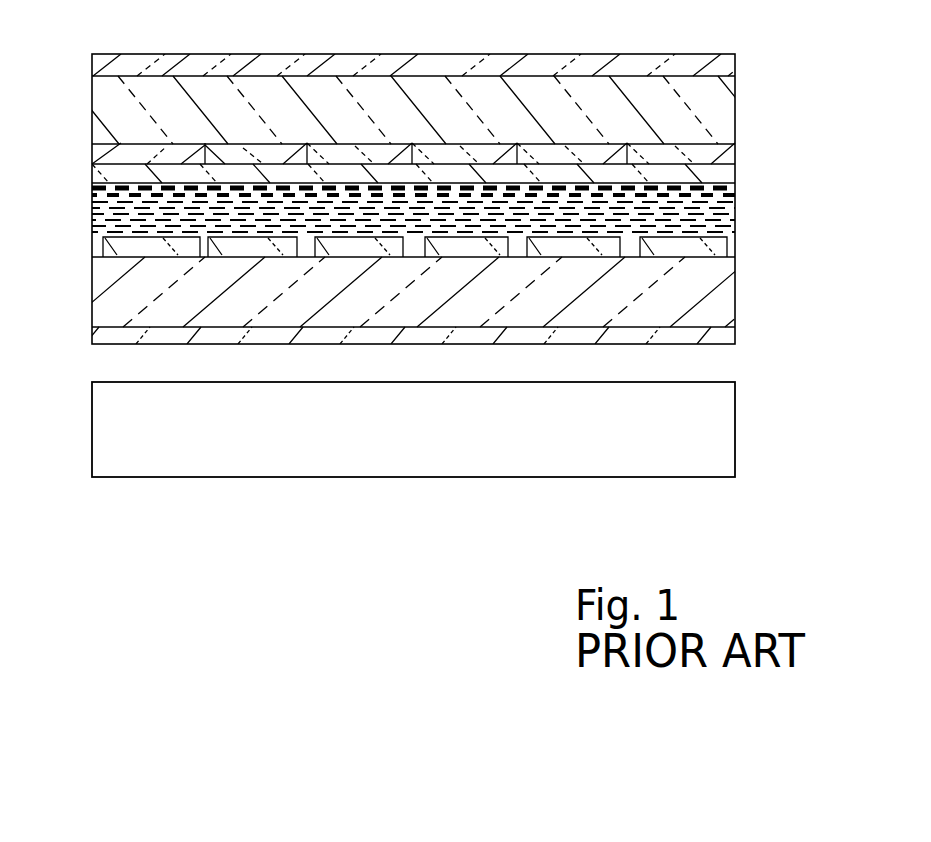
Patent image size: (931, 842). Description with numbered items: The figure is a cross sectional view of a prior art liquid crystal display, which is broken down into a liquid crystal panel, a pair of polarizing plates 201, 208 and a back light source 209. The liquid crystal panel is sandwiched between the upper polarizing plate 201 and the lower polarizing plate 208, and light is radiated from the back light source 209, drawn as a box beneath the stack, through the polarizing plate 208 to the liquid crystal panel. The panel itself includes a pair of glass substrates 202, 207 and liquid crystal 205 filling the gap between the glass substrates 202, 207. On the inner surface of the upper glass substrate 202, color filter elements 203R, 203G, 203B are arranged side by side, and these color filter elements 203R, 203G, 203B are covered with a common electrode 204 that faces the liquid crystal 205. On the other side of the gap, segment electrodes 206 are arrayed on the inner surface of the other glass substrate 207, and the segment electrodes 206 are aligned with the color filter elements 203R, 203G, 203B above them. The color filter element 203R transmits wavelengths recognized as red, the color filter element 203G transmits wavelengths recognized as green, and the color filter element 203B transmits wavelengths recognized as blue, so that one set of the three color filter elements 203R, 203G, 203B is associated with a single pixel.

The polarizing plate 201 is at (735, 62).
The glass substrate 202 is at (735, 112).
The color filter element 203R is at (142, 150).
The color filter element 203G is at (257, 150).
The color filter element 203B is at (735, 147).
The common electrode 204 is at (735, 173).
The liquid crystal 205 is at (735, 217).
The segment electrodes 206 is at (735, 257).
The glass substrate 207 is at (735, 297).
The polarizing plate 208 is at (735, 337).
The back light source 209 is at (735, 450).